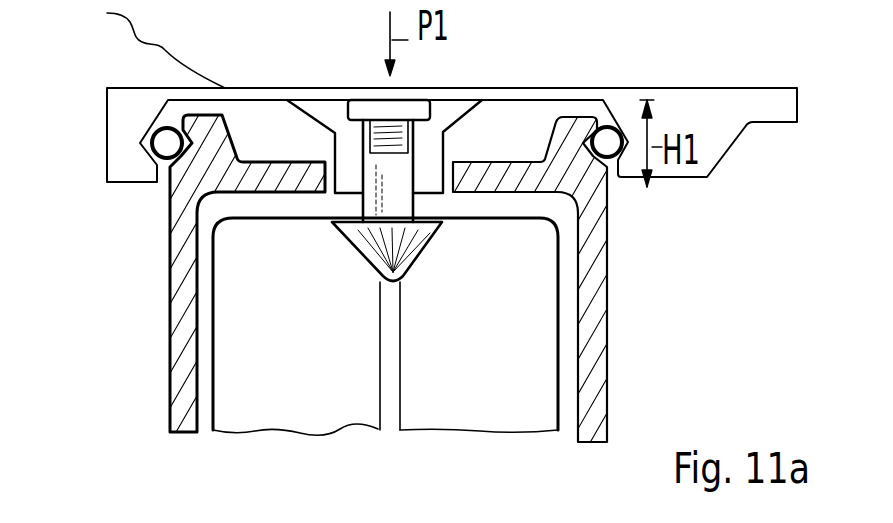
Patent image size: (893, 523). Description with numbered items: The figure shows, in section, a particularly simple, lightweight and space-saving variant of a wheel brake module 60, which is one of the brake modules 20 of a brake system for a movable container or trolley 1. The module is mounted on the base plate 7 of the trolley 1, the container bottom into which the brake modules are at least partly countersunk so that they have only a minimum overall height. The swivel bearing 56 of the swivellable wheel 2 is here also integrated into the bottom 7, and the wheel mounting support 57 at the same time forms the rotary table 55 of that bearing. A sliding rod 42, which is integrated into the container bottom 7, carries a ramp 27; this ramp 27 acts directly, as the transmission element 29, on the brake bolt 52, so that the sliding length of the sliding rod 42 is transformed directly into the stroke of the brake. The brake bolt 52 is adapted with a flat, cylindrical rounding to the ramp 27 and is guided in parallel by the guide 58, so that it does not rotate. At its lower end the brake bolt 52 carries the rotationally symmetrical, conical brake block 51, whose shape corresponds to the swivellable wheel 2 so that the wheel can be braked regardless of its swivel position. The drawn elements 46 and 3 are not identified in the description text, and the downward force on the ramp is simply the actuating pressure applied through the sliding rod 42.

The movable container or trolley 1 is at (107, 33).
The base plate 7 is at (117, 115).
The brake module 20 is at (78, 172).
The swivel bearing 56 is at (160, 160).
The wheel mounting support 57 is at (177, 332).
The guide 58 is at (343, 153).
The cap screw 46 is at (475, 157).
The ramp 27 is at (387, 128).
The sliding rod 42 is at (405, 108).
The rotary table 55 is at (498, 175).
The brake bolt 52 is at (403, 207).
The transmission element 29 is at (380, 190).
The needle rod 3 is at (370, 257).
The brake block 51 is at (412, 252).
The wheel 2 is at (560, 373).
The wheel brake module 60 is at (720, 303).